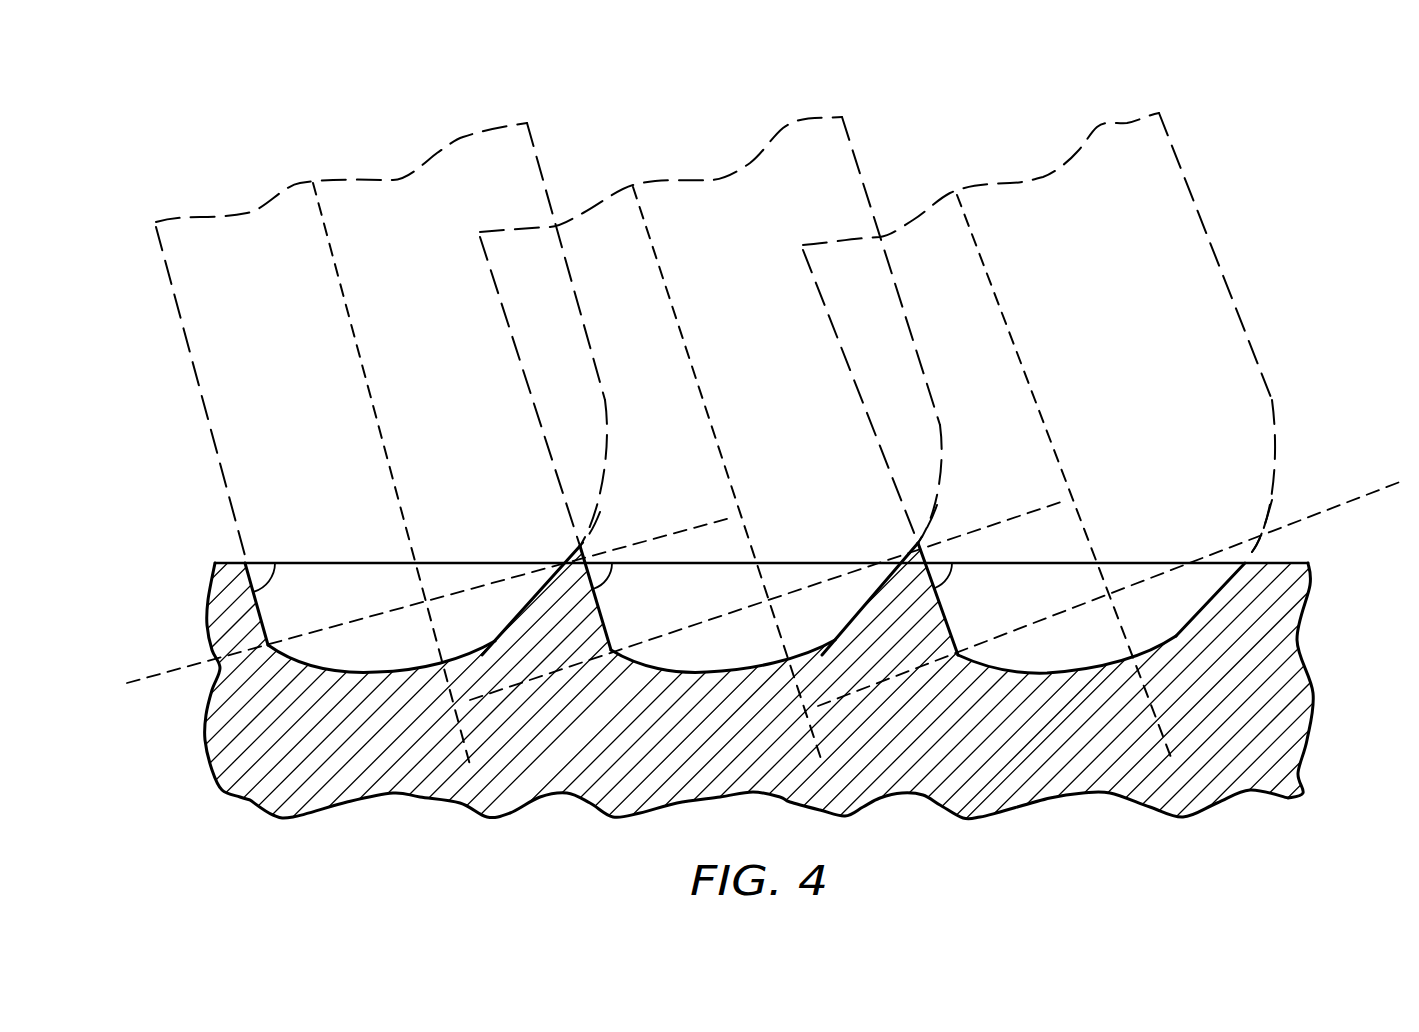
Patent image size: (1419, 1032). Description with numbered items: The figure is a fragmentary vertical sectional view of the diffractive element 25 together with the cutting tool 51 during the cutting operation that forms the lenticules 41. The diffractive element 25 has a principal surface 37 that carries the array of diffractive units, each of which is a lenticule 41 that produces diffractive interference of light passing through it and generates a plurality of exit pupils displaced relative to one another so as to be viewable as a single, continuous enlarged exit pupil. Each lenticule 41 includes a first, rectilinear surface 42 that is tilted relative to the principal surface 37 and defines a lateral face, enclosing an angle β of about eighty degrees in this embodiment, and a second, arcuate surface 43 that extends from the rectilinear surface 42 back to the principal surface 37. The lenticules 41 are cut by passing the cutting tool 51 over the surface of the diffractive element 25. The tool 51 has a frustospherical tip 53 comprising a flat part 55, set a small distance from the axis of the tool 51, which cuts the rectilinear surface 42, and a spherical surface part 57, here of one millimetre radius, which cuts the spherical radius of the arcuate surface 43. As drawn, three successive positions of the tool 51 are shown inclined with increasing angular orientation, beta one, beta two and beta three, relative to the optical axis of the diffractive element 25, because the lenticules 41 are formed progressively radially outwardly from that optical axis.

The diffractive element 25 is at (1073, 822).
The principal surface 37 is at (224, 562).
The lenticule 41 is at (492, 550).
The rectilinear surface 42 is at (268, 618).
The arcuate surface 43 is at (495, 640).
The cutting tool 51 is at (469, 116).
The frustospherical tip 53 is at (516, 402).
The flat part 55 is at (176, 311).
The spherical surface part 57 is at (597, 520).